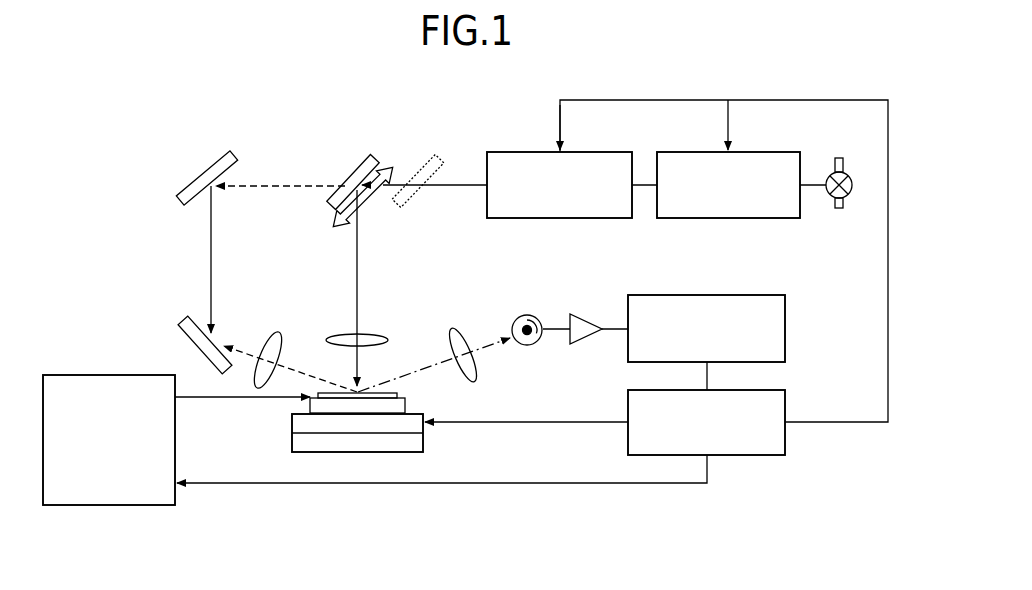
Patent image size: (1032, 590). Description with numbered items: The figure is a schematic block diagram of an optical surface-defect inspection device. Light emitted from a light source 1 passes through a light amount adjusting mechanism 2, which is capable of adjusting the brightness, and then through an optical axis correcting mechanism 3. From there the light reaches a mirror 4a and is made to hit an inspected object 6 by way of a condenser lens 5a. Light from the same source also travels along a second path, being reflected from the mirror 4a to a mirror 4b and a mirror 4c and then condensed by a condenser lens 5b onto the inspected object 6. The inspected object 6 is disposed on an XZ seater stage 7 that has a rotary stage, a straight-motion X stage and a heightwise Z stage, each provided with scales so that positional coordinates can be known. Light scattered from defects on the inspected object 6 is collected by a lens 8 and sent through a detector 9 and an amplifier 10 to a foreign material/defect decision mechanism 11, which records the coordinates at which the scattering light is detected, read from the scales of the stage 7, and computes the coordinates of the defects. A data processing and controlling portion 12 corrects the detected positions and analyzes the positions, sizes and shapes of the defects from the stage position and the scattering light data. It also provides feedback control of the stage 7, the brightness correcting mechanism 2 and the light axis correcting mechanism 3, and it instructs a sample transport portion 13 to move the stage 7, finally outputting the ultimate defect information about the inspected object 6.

The light source 1 is at (852, 178).
The light amount adjusting mechanism 2 is at (728, 218).
The optical axis correcting mechanism 3 is at (560, 218).
The mirror 4a is at (358, 166).
The mirror 4b is at (213, 166).
The mirror 4c is at (184, 328).
The condenser lens 5a is at (385, 334).
The condenser lens 5b is at (277, 331).
The inspected object 6 is at (400, 397).
The XZ seater stage 7 is at (292, 423).
The lens 8 is at (459, 327).
The detector 9 is at (530, 346).
The amplifier 10 is at (587, 338).
The foreign material/defect decision mechanism 11 is at (786, 327).
The data processing and controlling portion 12 is at (786, 437).
The sample transport portion 13 is at (110, 505).